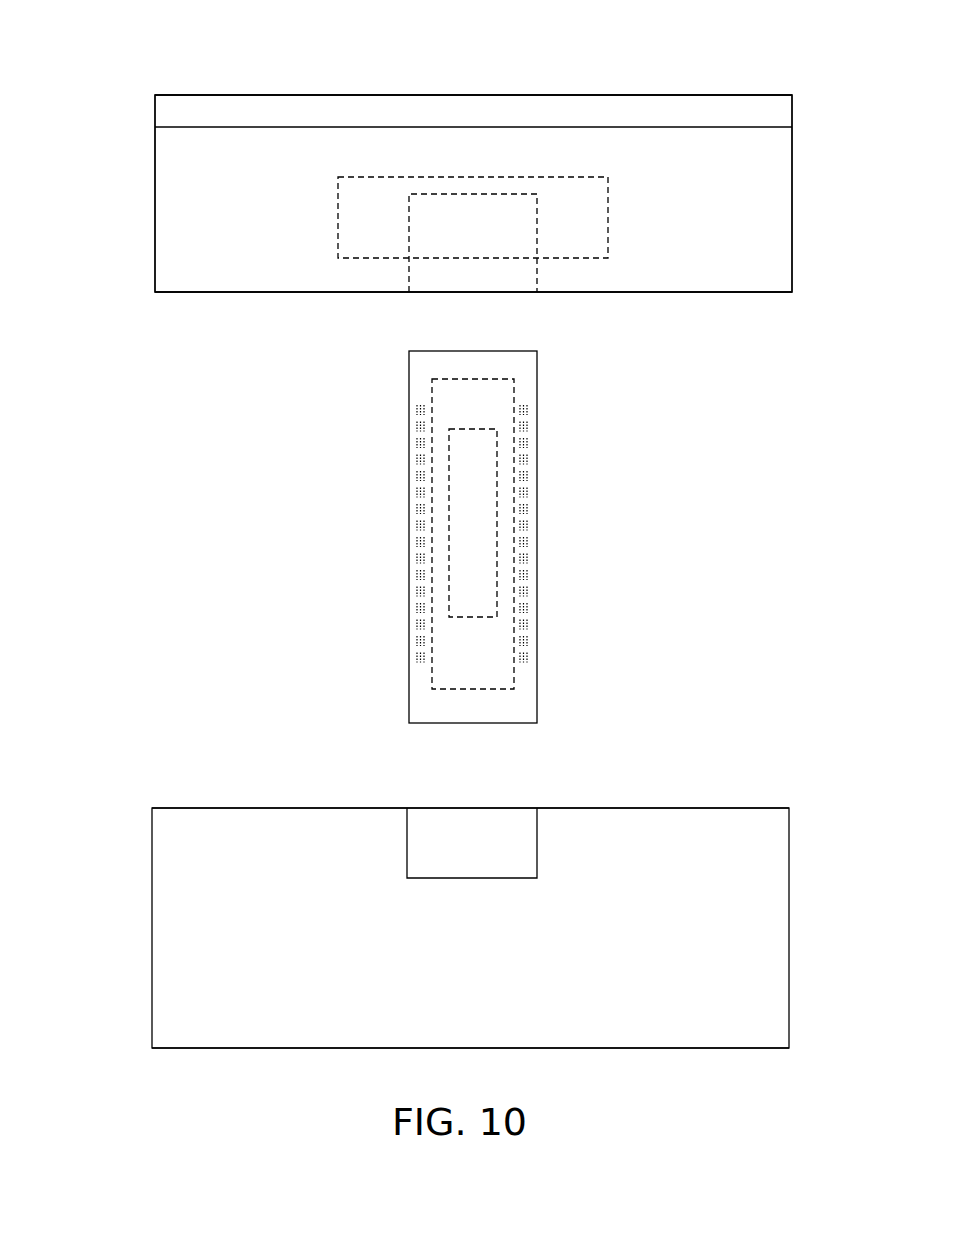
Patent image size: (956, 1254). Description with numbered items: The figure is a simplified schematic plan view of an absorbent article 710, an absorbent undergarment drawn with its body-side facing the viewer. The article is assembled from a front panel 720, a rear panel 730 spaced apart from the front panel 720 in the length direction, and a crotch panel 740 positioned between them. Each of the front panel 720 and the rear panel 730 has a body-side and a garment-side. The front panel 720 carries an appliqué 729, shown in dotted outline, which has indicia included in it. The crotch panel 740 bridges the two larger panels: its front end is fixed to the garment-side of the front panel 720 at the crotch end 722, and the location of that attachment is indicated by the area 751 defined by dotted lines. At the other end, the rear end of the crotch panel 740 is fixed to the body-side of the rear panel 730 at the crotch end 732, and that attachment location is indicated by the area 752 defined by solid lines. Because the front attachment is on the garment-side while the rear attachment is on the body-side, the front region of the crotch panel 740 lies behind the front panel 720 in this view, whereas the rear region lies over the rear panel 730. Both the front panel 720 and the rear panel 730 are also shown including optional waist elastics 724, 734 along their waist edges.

The absorbent article 710 is at (171, 76).
The front panel 720 is at (185, 237).
The crotch end 722 is at (233, 294).
The waist elastics 724 is at (557, 117).
The appliqué 729 is at (382, 207).
The area 751 is at (430, 264).
The crotch panel 740 is at (478, 520).
The area 752 is at (429, 828).
The crotch end 732 is at (265, 807).
The rear panel 730 is at (190, 941).
The waist elastics 734 is at (347, 1033).